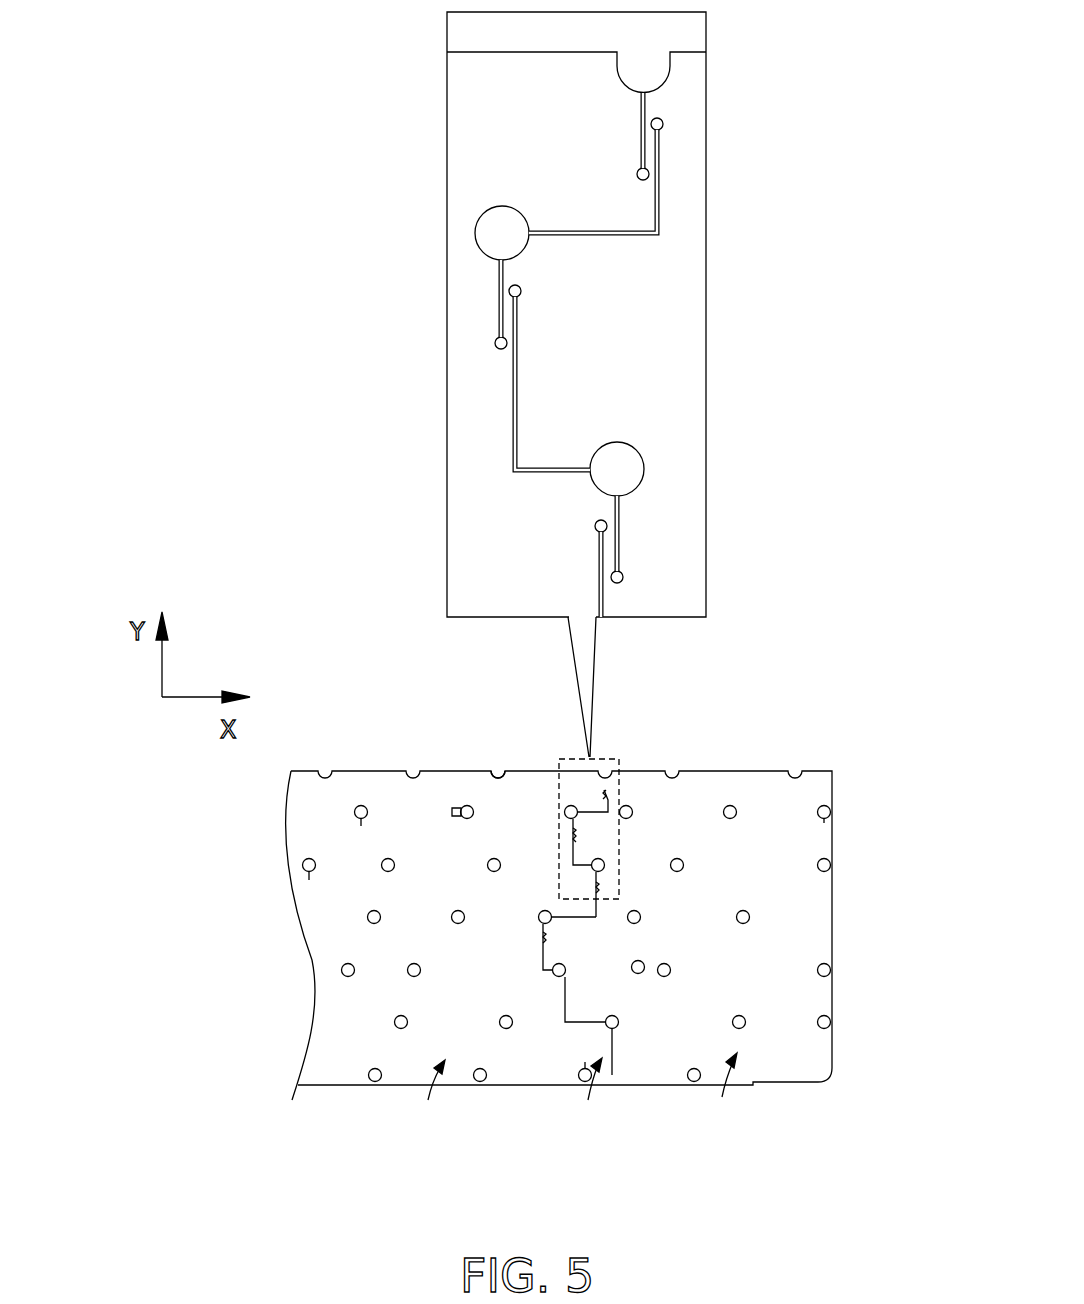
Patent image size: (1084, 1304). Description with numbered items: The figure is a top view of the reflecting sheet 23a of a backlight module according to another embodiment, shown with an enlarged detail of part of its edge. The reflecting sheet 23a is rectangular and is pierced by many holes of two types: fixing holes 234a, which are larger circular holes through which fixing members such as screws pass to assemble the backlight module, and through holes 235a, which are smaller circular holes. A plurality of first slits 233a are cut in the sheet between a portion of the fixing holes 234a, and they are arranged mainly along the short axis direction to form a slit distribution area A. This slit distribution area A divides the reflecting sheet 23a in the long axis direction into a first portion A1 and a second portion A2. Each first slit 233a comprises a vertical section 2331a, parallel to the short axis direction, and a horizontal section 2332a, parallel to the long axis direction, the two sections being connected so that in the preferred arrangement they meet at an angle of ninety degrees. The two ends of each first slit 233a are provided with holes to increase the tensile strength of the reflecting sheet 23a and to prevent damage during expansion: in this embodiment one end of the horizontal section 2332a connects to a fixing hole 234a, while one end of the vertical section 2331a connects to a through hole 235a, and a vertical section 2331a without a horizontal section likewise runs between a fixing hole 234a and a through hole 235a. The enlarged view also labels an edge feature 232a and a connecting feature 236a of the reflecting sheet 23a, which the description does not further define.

The reflecting sheet 23a is at (464, 133).
The notch 232a is at (483, 780).
The first slit 233a is at (569, 602).
The vertical section 2331a is at (660, 205).
The horizontal section 2332a is at (635, 240).
The fixing hole 234a is at (486, 236).
The through hole 235a is at (662, 122).
The connection trace 236a is at (641, 170).
The slit distribution area A is at (592, 1090).
The first portion A1 is at (726, 1091).
The second portion A2 is at (432, 1101).